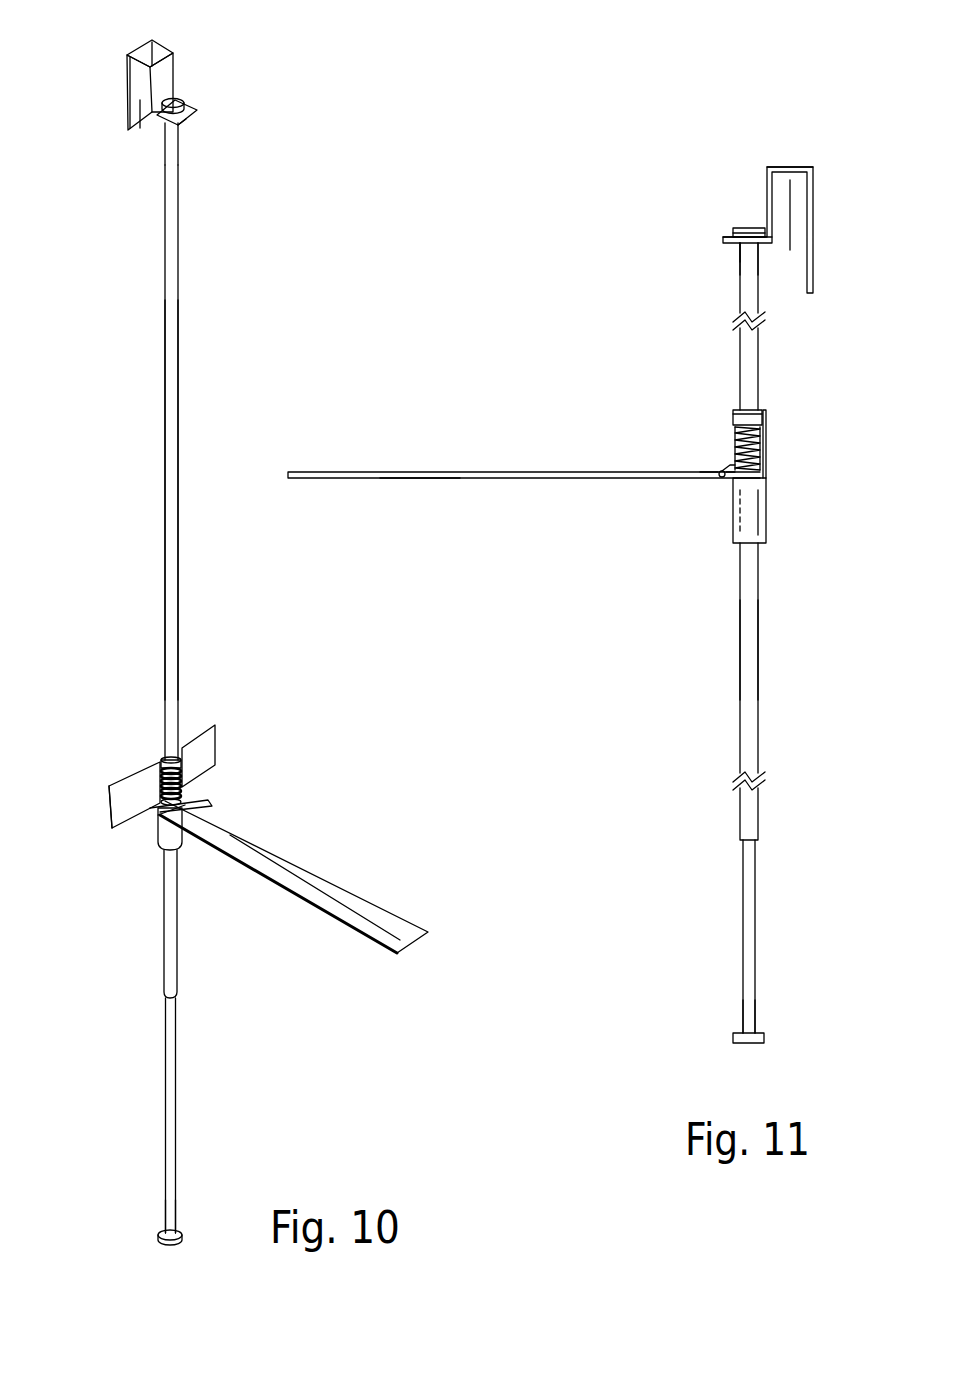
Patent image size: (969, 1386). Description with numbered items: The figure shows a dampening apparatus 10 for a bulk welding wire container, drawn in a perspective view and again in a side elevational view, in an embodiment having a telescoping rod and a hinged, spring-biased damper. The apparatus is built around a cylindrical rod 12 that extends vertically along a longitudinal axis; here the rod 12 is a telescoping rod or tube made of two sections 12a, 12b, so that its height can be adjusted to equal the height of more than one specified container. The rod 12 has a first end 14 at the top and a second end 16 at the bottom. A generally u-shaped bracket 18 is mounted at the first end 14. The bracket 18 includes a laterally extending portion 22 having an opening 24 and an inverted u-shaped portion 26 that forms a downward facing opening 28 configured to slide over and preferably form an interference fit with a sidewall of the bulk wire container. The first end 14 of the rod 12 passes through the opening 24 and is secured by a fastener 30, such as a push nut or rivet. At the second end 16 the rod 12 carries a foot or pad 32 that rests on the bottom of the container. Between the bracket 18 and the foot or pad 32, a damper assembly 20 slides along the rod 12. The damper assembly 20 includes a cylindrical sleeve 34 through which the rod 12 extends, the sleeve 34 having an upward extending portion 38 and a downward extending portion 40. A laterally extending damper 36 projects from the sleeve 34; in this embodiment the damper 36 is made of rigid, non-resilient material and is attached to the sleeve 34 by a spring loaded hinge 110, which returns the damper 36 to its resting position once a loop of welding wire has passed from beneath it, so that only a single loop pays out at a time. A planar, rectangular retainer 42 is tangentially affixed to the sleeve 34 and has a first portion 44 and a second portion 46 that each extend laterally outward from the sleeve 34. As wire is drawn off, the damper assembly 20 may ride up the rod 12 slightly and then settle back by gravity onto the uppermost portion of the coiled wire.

In FIG. 10, the dampening apparatus 10 is at (258, 227).
In FIG. 11, the dampening apparatus 10 is at (568, 357).
In FIG. 10, the cylindrical rod 12 is at (146, 529).
In FIG. 11, the cylindrical rod 12 is at (720, 601).
In FIG. 10, the telescoping rod section 12a is at (170, 565).
In FIG. 11, the telescoping rod section 12a is at (760, 367).
In FIG. 10, the telescoping rod section 12b is at (172, 1120).
In FIG. 11, the telescoping rod section 12b is at (753, 913).
In FIG. 10, the first end 14 is at (172, 133).
In FIG. 11, the first end 14 is at (743, 270).
In FIG. 10, the second end 16 is at (178, 1220).
In FIG. 11, the second end 16 is at (748, 1033).
In FIG. 10, the bracket 18 is at (128, 98).
In FIG. 11, the bracket 18 is at (813, 218).
In FIG. 10, the damper assembly 20 is at (308, 910).
In FIG. 11, the damper assembly 20 is at (485, 468).
In FIG. 10, the laterally extending portion 22 is at (192, 108).
In FIG. 11, the laterally extending portion 22 is at (723, 238).
In FIG. 10, the opening 24 is at (185, 118).
In FIG. 11, the opening 24 is at (740, 260).
In FIG. 10, the inverted u-shaped portion 26 is at (150, 53).
In FIG. 11, the inverted u-shaped portion 26 is at (790, 165).
In FIG. 10, the downward facing opening 28 is at (140, 110).
In FIG. 11, the downward facing opening 28 is at (790, 262).
In FIG. 10, the fastener 30 is at (173, 99).
In FIG. 11, the fastener 30 is at (750, 227).
In FIG. 10, the foot or pad 32 is at (160, 1238).
In FIG. 11, the foot or pad 32 is at (733, 1037).
In FIG. 10, the cylindrical sleeve 34 is at (198, 812).
In FIG. 11, the cylindrical sleeve 34 is at (747, 517).
In FIG. 10, the damper 36 is at (293, 863).
In FIG. 11, the damper 36 is at (413, 480).
In FIG. 10, the upward extending portion 38 is at (195, 738).
In FIG. 11, the upward extending portion 38 is at (765, 410).
In FIG. 10, the downward extending portion 40 is at (163, 827).
In FIG. 11, the downward extending portion 40 is at (767, 533).
In FIG. 10, the retainer 42 is at (148, 773).
In FIG. 10, the first portion 44 is at (210, 743).
In FIG. 11, the first portion 44 is at (758, 442).
In FIG. 10, the second portion 46 is at (110, 790).
In FIG. 10, the spring loaded hinge 110 is at (202, 800).
In FIG. 11, the spring loaded hinge 110 is at (723, 470).